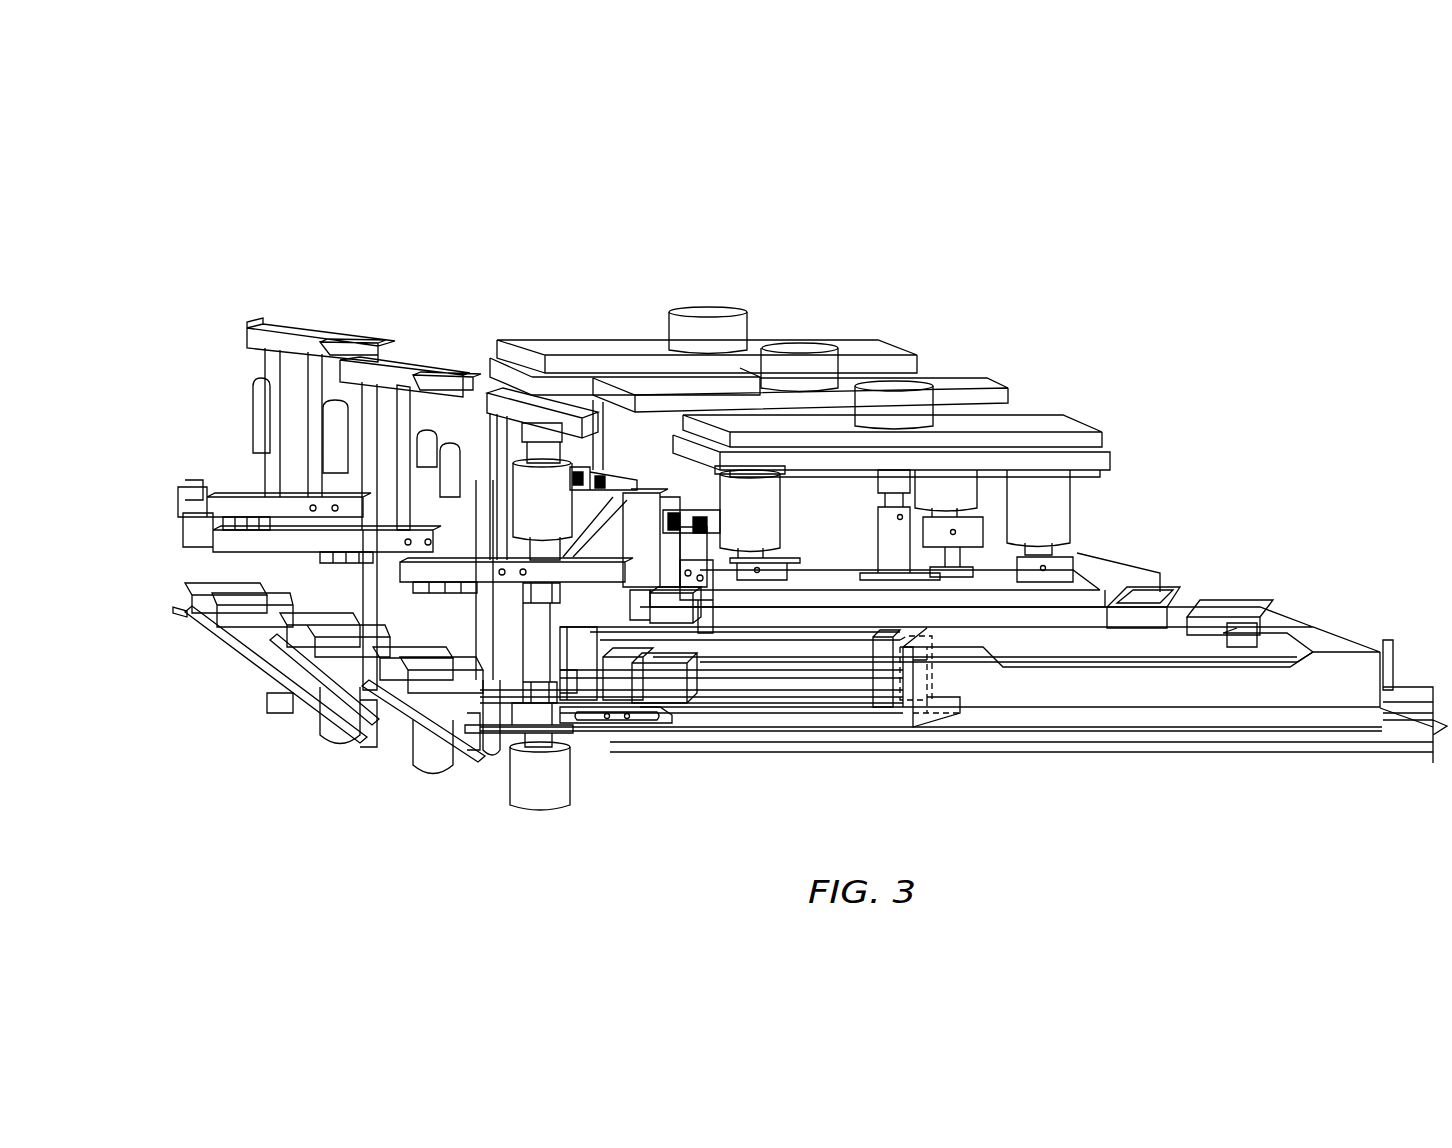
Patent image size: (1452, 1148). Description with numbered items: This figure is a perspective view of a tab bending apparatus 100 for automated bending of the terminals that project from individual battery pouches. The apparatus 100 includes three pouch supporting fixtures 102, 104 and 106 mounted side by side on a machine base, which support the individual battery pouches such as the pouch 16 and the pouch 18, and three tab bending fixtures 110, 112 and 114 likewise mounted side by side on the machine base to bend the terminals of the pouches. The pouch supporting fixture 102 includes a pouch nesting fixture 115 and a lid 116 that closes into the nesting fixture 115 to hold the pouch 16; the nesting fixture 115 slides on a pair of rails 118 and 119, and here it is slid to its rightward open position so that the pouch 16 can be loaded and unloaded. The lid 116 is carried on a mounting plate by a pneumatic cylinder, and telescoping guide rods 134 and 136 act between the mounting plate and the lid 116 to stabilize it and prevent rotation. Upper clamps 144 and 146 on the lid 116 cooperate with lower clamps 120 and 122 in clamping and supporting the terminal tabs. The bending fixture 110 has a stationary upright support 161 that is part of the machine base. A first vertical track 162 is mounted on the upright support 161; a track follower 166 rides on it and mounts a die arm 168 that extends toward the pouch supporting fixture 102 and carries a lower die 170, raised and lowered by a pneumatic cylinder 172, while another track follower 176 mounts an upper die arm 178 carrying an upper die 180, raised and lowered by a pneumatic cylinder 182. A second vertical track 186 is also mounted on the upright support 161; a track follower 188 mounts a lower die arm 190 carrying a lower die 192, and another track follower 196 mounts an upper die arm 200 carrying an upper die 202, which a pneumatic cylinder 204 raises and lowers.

The tab bending apparatus 100 is at (431, 270).
The tab bending fixture 114 is at (325, 342).
The tab bending fixture 112 is at (411, 366).
The bending fixture 110 is at (505, 404).
The pneumatic cylinder 204 is at (423, 360).
The second vertical track 186 is at (447, 490).
The pneumatic cylinder 182 is at (533, 502).
The upper die arm 200 is at (588, 470).
The upper die 202 is at (637, 517).
The upper die arm 178 is at (615, 470).
The telescoping guide rod 134 is at (755, 506).
The telescoping guide rod 136 is at (1048, 503).
The pouch supporting fixture 106 is at (883, 348).
The pouch supporting fixture 104 is at (972, 387).
The pouch supporting fixture 102 is at (1067, 421).
The battery pouch 18 is at (1090, 604).
The lid 116 is at (1192, 608).
The battery pouch 16 is at (1212, 650).
The pouch nesting fixture 115 is at (1332, 690).
The rail 119 is at (1397, 690).
The rail 118 is at (1403, 727).
The track follower 196 is at (390, 562).
The track follower 176 is at (425, 570).
The track follower 188 is at (323, 727).
The first vertical track 162 is at (423, 748).
The track follower 166 is at (467, 712).
The stationary upright support 161 is at (492, 720).
The pneumatic cylinder 172 is at (533, 795).
The die arm 168 is at (555, 733).
The lower die arm 190 is at (590, 724).
The lower die 192 is at (585, 688).
The lower die 170 is at (660, 688).
The upper die 180 is at (688, 595).
The upper clamp 146 is at (673, 607).
The upper clamp 144 is at (693, 597).
The lower clamp 122 is at (880, 695).
The lower clamp 120 is at (903, 672).